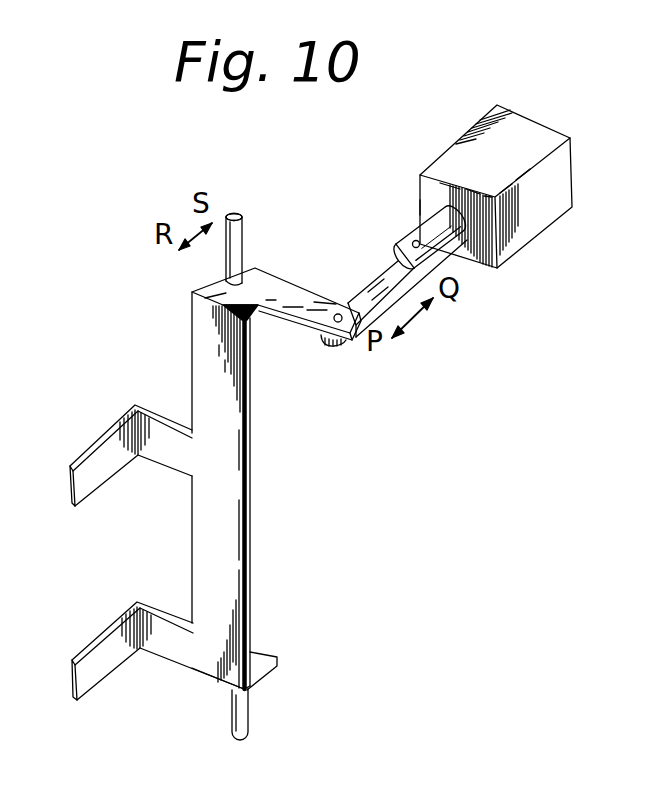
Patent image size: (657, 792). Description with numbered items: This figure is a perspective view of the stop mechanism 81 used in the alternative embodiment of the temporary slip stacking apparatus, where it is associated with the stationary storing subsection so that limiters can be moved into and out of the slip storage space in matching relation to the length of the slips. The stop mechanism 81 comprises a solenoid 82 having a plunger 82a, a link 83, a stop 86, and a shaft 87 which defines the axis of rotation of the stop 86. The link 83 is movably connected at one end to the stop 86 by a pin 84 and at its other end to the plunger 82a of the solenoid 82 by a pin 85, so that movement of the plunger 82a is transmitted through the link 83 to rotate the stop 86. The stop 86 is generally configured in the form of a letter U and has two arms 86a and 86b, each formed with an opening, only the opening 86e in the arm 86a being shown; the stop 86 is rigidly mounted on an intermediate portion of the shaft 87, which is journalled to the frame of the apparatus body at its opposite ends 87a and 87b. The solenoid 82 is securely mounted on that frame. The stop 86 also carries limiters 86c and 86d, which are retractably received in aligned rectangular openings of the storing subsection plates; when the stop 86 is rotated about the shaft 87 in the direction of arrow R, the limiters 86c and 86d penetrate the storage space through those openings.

The stop mechanism 81 is at (136, 330).
The solenoid 82 is at (537, 229).
The plunger 82a is at (416, 200).
The link 83 is at (367, 281).
The pin 84 is at (350, 343).
The pin 85 is at (414, 241).
The stop 86 is at (254, 270).
The arm 86a is at (288, 283).
The arm 86b is at (265, 653).
The limiter 86c is at (93, 445).
The limiter 86d is at (98, 638).
The opening 86e is at (221, 289).
The shaft 87 is at (241, 211).
The end of shaft 87a is at (227, 213).
The end of shaft 87b is at (248, 729).